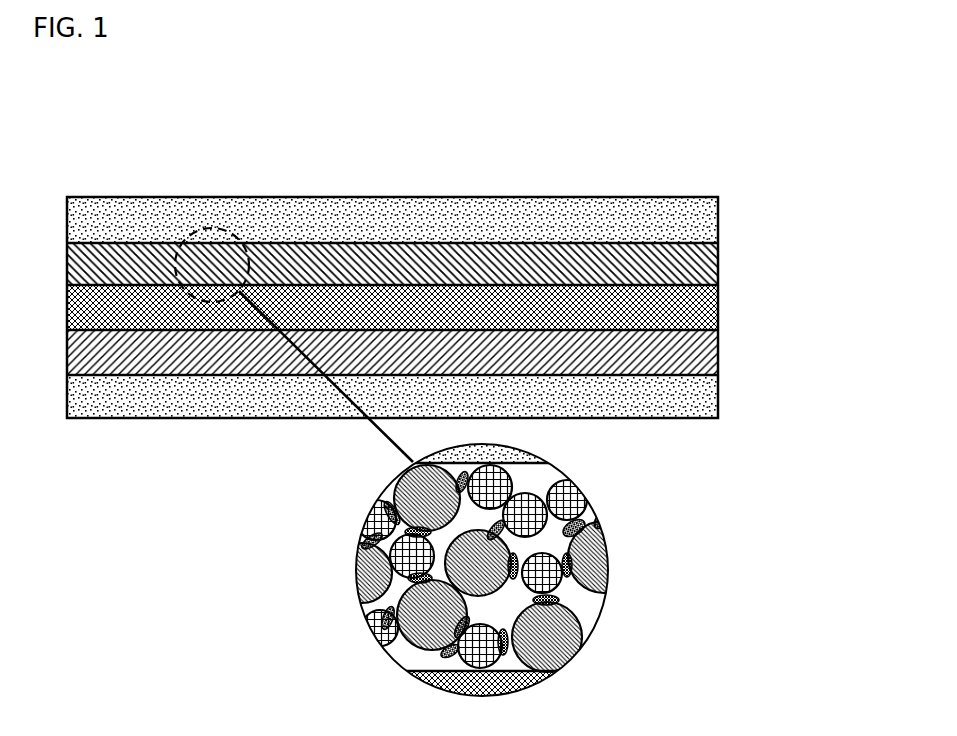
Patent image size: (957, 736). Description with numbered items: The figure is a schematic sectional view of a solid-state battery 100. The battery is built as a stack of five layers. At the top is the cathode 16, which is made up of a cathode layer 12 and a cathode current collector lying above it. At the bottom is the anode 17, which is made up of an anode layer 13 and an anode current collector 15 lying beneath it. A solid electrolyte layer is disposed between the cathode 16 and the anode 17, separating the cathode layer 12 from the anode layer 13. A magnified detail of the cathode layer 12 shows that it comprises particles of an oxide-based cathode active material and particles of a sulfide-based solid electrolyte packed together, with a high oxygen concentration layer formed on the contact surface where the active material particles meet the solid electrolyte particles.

The solid-state battery 100 is at (76, 156).
The cathode layer 12 is at (440, 264).
The anode layer 13 is at (720, 345).
The anode current collector 15 is at (720, 390).
The cathode 16 is at (475, 241).
The anode 17 is at (477, 374).